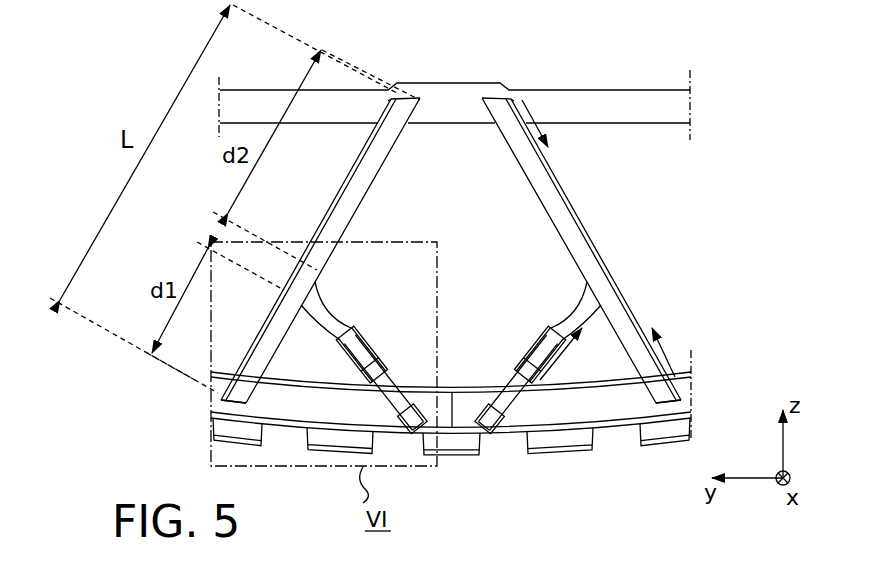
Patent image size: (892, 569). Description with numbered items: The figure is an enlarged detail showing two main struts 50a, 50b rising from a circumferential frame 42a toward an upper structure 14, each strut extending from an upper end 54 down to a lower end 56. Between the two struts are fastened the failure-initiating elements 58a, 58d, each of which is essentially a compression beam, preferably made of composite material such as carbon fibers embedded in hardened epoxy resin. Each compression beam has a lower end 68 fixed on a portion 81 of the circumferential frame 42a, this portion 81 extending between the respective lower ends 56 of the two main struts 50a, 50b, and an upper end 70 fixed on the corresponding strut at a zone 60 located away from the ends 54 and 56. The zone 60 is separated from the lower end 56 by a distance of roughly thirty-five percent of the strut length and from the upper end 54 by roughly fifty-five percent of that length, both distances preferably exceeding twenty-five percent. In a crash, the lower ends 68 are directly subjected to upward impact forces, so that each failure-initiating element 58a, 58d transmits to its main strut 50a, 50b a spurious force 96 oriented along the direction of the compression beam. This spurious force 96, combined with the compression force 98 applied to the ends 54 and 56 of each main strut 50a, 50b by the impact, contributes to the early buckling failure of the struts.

The fuselage skin / plate 14 is at (553, 95).
The upper end of the main strut 54 is at (410, 97).
The main strut 50a is at (402, 132).
The main strut 50b is at (501, 133).
The zone of the strut 60 is at (299, 282).
The upper end of the failure-initiating element 70 is at (320, 297).
The failure-initiating element 58a is at (367, 347).
The second brace 58d is at (525, 360).
The lower end of the failure-initiating element 68 is at (418, 433).
The spurious force 96 is at (560, 357).
The compression force 98 is at (545, 126).
The lower end of the main strut 56 is at (215, 393).
The portion of the circumferential frame 81 is at (513, 413).
The circumferential frame 42a is at (615, 427).